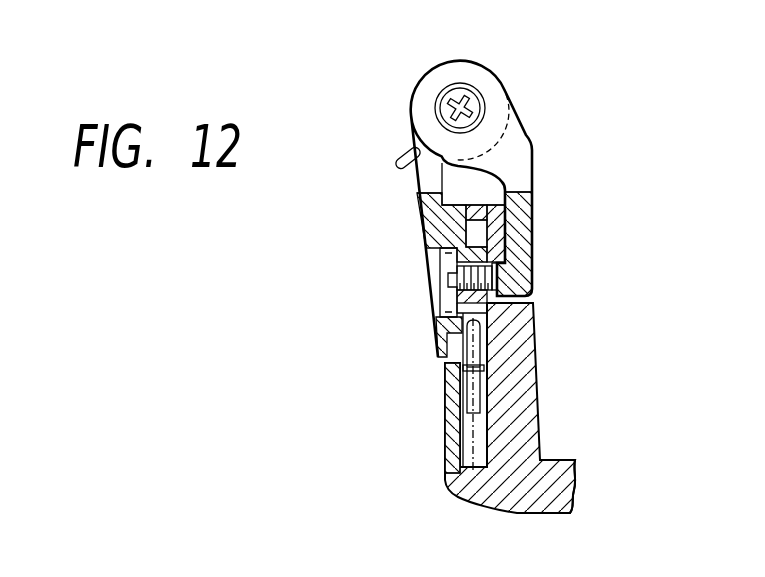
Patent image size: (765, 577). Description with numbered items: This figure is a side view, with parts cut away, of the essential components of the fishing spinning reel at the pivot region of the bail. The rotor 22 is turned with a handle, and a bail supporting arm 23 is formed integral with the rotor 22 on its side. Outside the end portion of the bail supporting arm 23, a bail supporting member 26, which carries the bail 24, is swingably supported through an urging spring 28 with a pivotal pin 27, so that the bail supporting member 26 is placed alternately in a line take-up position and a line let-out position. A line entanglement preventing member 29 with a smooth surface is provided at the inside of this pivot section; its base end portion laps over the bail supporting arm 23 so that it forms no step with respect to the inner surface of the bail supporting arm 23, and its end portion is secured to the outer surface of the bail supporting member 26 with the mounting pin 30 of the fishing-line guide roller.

The rotor 22 is at (565, 483).
The bail supporting arm 23 is at (527, 382).
The bail 24 is at (397, 163).
The bail supporting member 26 is at (420, 203).
The pivotal pin 27 is at (440, 293).
The urging spring 28 is at (473, 395).
The line entanglement preventing member 29 is at (525, 150).
The mounting pin 30 is at (485, 103).